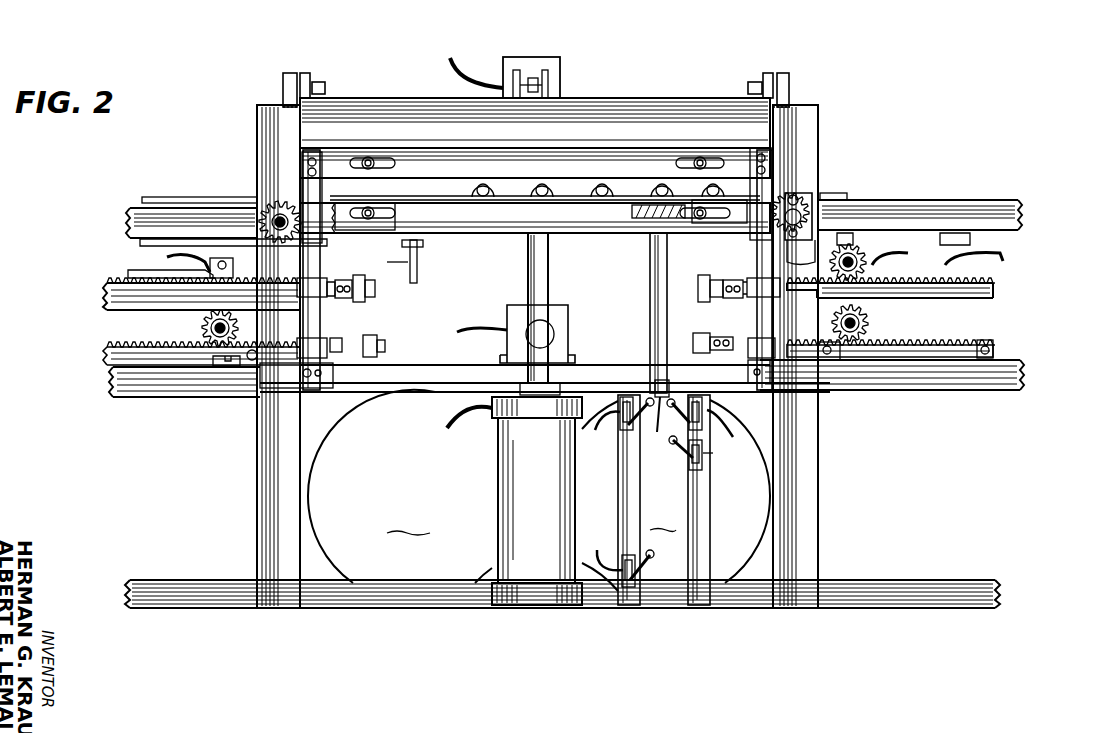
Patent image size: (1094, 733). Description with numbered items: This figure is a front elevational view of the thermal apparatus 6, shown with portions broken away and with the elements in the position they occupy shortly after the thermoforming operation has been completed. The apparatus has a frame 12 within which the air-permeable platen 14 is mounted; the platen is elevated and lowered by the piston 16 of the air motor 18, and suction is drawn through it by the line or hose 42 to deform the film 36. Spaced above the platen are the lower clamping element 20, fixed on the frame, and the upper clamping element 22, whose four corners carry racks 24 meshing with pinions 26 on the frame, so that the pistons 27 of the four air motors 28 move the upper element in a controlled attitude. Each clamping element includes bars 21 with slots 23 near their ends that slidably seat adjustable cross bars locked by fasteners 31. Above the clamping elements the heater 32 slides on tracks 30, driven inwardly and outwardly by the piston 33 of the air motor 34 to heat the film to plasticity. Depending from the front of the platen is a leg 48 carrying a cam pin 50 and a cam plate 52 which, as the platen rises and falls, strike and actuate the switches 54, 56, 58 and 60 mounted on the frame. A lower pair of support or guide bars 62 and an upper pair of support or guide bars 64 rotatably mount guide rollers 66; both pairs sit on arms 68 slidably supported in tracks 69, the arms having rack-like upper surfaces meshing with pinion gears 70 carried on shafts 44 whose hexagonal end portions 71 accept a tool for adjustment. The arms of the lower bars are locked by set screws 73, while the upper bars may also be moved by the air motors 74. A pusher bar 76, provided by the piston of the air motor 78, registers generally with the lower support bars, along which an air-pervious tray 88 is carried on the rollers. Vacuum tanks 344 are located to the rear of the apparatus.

The thermal apparatus 6 is at (637, 92).
The frame 12 is at (258, 118).
The air-permeable platen 14 is at (610, 232).
The piston 16 is at (548, 297).
The air motor 18 is at (493, 480).
The lower clamping element 20 is at (425, 255).
The bars 21 is at (425, 173).
The upper clamping element 22 is at (737, 147).
The slots 23 is at (338, 207).
The racks 24 is at (310, 190).
The pinions 26 is at (270, 210).
The pistons 27 is at (770, 267).
The air motors 28 is at (722, 232).
The tracks 30 is at (270, 104).
The fasteners 31 is at (380, 148).
The heater 32 is at (372, 98).
The piston 33 is at (525, 75).
The air motor 34 is at (542, 57).
The film 36 is at (150, 197).
The line or hose 42 is at (381, 261).
The shafts 44 is at (213, 335).
The leg 48 is at (667, 313).
The cam pin 50 is at (658, 413).
The cam plate 52 is at (673, 378).
The switch 54 is at (625, 427).
The switch 56 is at (633, 557).
The switch 58 is at (713, 500).
The switch 60 is at (707, 463).
The lower support or guide bars 62 is at (378, 338).
The upper support or guide bars 64 is at (343, 278).
The guide rollers 66 is at (374, 302).
The arms 68 is at (282, 297).
The tracks 69 is at (116, 302).
The pinion gears 70 is at (207, 273).
The hexagonal end portions 71 is at (210, 258).
The set screws 73 is at (252, 360).
The air motors 74 is at (130, 272).
The pusher bar 76 is at (554, 333).
The air motor 78 is at (508, 303).
The air-pervious tray 88 is at (643, 200).
The tanks 344 is at (539, 490).